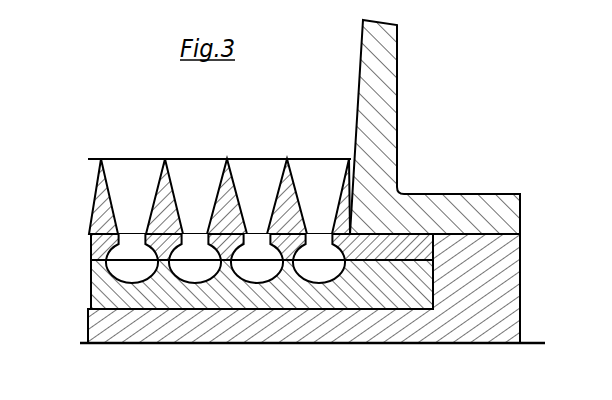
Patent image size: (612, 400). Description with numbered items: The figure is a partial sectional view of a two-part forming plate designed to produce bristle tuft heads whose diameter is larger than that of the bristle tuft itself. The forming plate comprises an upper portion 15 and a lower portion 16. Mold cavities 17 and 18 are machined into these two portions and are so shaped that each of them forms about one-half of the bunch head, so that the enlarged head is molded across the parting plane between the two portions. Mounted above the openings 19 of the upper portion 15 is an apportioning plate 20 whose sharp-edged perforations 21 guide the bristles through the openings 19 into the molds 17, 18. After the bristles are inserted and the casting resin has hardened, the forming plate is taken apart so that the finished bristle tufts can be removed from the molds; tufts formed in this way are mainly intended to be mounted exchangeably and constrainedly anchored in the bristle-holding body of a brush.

The upper portion 15 is at (97, 251).
The lower portion 16 is at (93, 295).
The mold cavity 17 is at (103, 259).
The mold cavity 18 is at (114, 268).
The openings 19 is at (136, 242).
The apportioning plate 20 is at (290, 161).
The sharp-edged perforations 21 is at (187, 163).